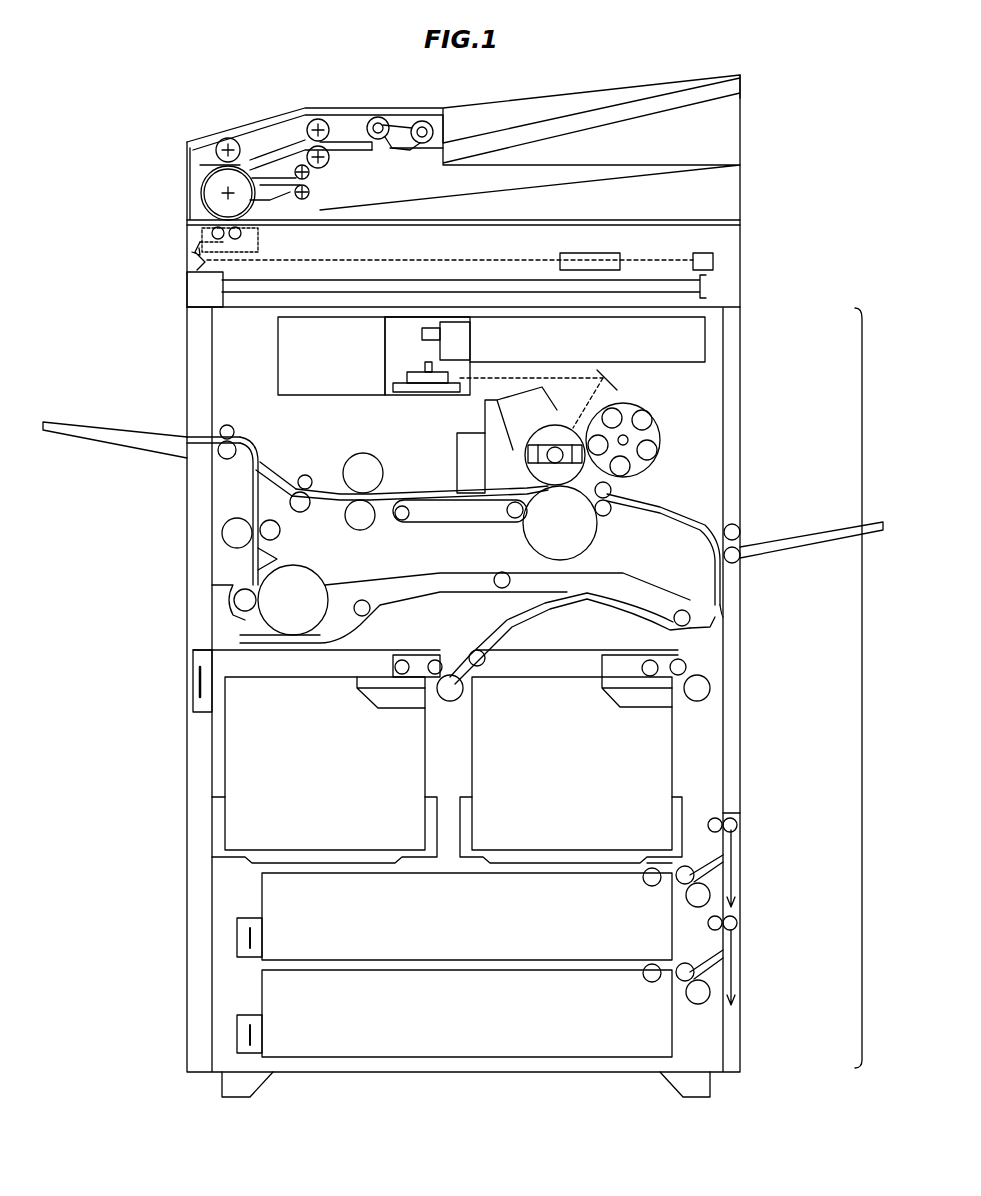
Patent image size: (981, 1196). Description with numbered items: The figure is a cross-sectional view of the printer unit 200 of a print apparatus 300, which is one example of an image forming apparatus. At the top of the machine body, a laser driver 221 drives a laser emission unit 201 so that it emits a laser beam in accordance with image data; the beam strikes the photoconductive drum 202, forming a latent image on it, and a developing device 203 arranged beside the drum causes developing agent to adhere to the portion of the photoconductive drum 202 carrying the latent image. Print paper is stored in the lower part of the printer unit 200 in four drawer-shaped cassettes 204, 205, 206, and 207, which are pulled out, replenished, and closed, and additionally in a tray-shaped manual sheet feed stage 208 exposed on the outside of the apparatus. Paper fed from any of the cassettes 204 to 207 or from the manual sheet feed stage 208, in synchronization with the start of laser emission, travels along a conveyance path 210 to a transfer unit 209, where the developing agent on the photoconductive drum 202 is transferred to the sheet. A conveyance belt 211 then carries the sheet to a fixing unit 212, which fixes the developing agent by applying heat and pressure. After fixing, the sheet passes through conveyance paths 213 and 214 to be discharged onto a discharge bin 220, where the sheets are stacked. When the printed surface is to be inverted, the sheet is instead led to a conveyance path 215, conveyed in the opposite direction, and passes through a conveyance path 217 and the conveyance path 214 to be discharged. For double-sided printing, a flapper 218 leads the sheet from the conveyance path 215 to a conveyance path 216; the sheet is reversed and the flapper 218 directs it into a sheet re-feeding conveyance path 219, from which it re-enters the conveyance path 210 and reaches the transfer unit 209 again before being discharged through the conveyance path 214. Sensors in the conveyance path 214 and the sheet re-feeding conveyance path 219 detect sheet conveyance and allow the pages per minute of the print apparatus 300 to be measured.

The printer unit 200 is at (862, 688).
The laser emission unit 201 is at (427, 397).
The photoconductive drum 202 is at (527, 478).
The developing device 203 is at (655, 432).
The cassette 204 is at (660, 765).
The cassette 205 is at (240, 762).
The cassette 206 is at (660, 943).
The cassette 207 is at (660, 1028).
The manual sheet feed stage 208 is at (806, 530).
The transfer unit 209 is at (590, 532).
The conveyance path 210 is at (662, 507).
The conveyance belt 211 is at (482, 517).
The fixing unit 212 is at (363, 453).
The conveyance path 213 is at (252, 453).
The conveyance path 214 is at (200, 443).
The conveyance path 215 is at (277, 510).
The conveyance path 216 is at (385, 580).
The conveyance path 217 is at (255, 498).
The flapper 218 is at (255, 563).
The sheet re-feeding conveyance path 219 is at (420, 605).
The discharge bin 220 is at (90, 420).
The laser driver 221 is at (290, 352).
The print apparatus 300 is at (482, 1141).